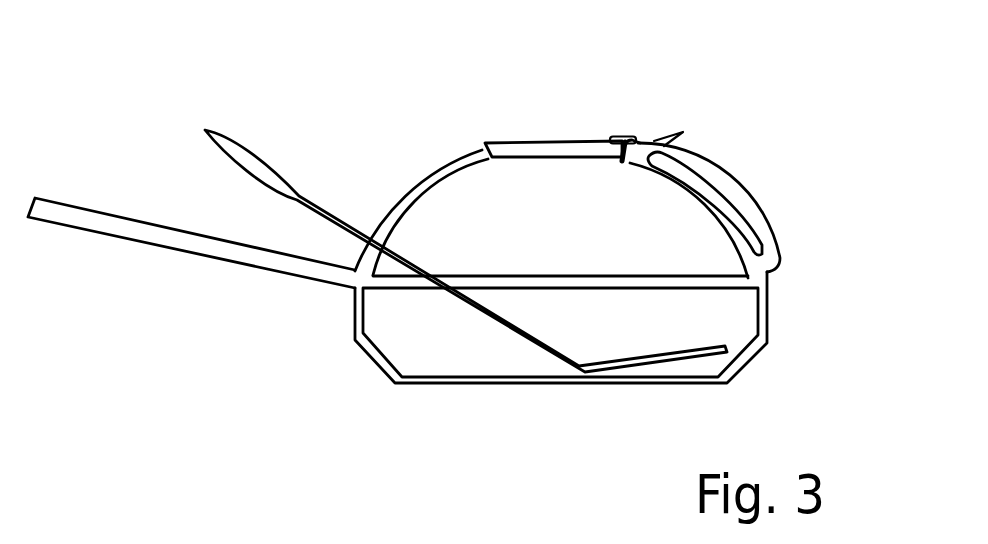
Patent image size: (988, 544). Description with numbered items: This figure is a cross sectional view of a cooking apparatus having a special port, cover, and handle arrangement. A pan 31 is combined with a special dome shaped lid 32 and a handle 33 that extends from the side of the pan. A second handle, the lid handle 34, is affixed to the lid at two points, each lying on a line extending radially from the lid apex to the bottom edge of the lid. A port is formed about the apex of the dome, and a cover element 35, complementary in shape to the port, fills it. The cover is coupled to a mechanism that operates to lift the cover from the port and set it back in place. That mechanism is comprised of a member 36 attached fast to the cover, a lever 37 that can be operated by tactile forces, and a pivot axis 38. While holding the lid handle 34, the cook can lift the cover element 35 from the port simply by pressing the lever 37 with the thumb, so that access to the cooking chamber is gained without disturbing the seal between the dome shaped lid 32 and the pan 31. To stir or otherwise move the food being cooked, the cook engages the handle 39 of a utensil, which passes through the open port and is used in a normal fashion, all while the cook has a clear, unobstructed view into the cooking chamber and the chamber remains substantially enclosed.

The pan 31 is at (362, 313).
The dome shaped lid 32 is at (447, 175).
The handle 33 is at (268, 262).
The lid handle 34 is at (775, 242).
The cover element 35 is at (545, 148).
The member 36 is at (623, 138).
The lever 37 is at (683, 138).
The pivot axis 38 is at (645, 145).
The handle 39 is at (267, 167).